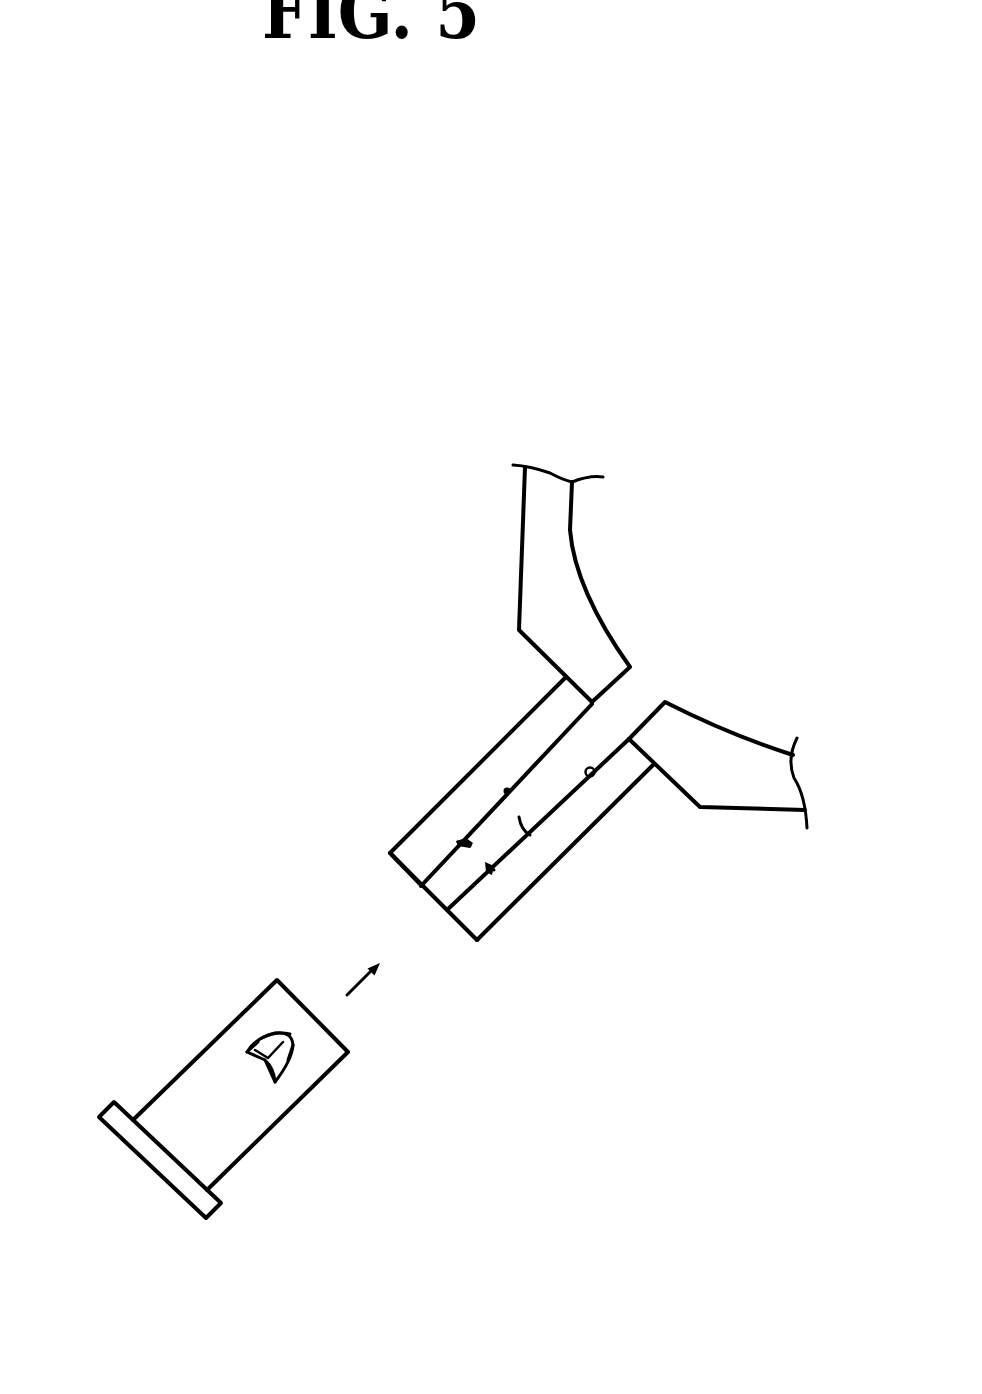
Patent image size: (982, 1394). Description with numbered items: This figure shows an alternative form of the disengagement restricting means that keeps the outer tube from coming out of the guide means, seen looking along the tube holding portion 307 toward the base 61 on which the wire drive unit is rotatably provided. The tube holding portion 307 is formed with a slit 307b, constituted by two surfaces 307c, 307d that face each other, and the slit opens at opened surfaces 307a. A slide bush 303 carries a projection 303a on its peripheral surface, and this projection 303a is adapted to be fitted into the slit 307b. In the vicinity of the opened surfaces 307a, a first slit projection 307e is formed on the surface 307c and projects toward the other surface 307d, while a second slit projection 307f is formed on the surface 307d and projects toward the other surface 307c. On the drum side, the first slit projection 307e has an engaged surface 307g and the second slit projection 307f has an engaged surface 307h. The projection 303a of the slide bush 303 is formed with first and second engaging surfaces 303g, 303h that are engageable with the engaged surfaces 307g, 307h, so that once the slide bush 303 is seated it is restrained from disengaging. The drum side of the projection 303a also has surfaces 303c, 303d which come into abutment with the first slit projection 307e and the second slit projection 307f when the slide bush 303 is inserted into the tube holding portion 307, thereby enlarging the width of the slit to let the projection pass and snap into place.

The base 61 is at (748, 787).
The slide bush 303 is at (215, 1093).
The projection 303a is at (258, 1040).
The abutment surface 303c is at (270, 1032).
The abutment surface 303d is at (288, 1058).
The first engaging surface 303g is at (250, 1055).
The second engaging surface 303h is at (270, 1082).
The tube holding portion 307 is at (572, 829).
The opened surfaces 307a is at (412, 878).
The slit 307b is at (530, 835).
The surface 307c is at (507, 790).
The surface 307d is at (594, 777).
The first slit projection 307e is at (458, 847).
The second slit projection 307f is at (490, 872).
The engaged surface 307g is at (457, 845).
The engaged surface 307h is at (493, 873).